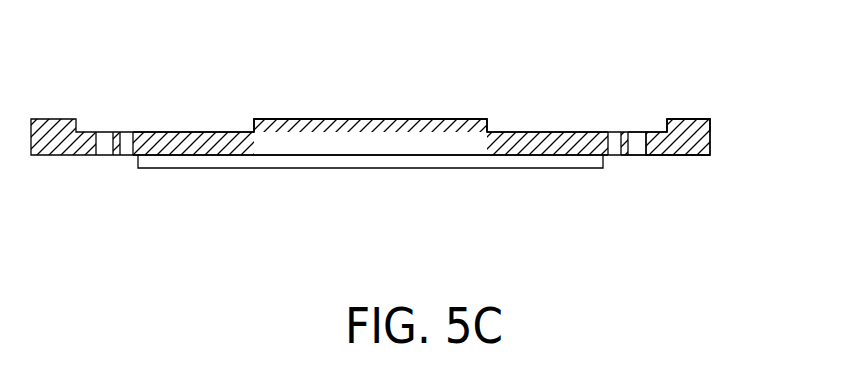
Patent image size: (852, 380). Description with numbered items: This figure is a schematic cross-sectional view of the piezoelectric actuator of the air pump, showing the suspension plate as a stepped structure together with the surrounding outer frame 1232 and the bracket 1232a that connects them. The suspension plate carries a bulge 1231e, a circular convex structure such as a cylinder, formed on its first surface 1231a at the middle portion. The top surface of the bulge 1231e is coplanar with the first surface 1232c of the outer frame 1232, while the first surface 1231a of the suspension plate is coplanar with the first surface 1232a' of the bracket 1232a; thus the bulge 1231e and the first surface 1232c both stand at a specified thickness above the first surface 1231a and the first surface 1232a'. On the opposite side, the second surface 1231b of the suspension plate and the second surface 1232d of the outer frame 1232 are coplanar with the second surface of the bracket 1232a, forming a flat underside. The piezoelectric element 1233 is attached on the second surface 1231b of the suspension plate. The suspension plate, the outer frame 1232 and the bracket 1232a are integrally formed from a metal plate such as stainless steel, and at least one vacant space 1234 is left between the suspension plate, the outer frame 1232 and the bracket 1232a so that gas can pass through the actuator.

The bulge 1231e is at (343, 118).
The first surface of the suspension plate 1231a is at (527, 132).
The second surface of the suspension plate 1231b is at (525, 157).
The piezoelectric element 1233 is at (396, 168).
The outer frame 1232 is at (692, 135).
The first surface of the outer frame 1232c is at (693, 119).
The second surface of the outer frame 1232d is at (692, 157).
The bracket 1232a is at (672, 182).
The first surface of the bracket 1232a' is at (646, 77).
The vacant space 1234 is at (639, 128).